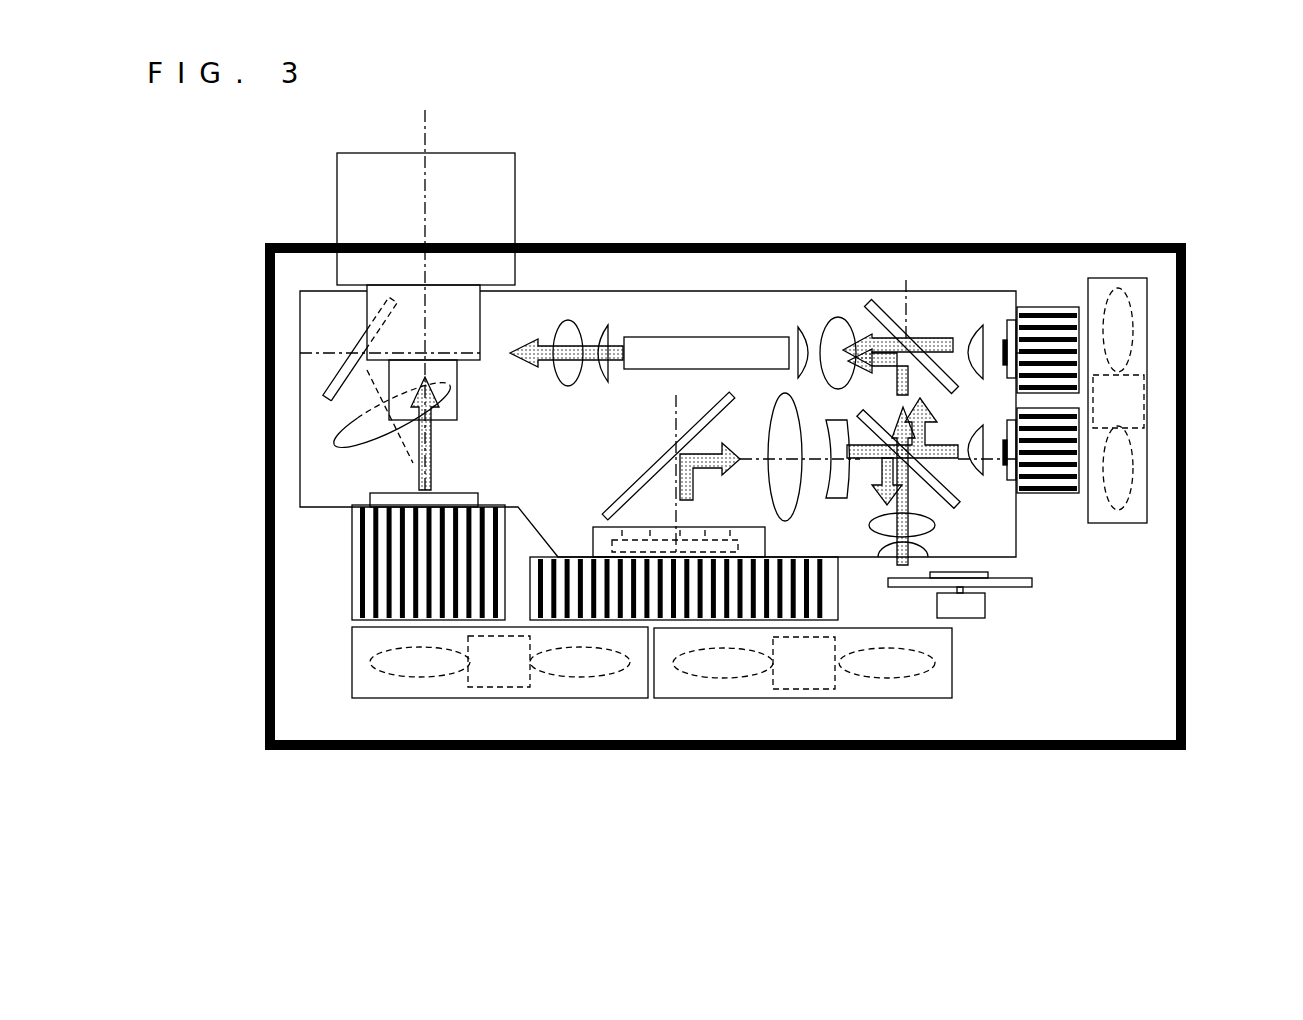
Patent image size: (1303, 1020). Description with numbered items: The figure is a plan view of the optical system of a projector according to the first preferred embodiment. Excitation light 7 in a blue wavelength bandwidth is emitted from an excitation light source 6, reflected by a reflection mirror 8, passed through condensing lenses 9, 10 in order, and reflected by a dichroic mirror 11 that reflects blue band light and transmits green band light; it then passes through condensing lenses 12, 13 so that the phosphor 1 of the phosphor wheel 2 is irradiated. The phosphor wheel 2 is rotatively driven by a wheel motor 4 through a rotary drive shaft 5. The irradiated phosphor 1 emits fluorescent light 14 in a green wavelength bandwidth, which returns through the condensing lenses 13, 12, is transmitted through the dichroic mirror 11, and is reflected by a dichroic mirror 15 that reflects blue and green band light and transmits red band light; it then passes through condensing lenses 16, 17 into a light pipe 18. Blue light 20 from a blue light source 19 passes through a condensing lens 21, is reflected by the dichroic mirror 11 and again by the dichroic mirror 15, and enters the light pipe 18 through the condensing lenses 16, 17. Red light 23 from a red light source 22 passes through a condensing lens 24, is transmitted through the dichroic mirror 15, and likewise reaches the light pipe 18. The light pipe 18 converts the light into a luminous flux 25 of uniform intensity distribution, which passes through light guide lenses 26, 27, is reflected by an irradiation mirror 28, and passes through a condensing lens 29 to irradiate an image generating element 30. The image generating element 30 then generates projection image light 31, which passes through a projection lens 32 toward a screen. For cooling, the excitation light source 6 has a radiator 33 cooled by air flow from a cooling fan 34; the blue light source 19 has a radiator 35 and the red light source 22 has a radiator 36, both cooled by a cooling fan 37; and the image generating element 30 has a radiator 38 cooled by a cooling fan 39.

The phosphor 1 is at (1015, 575).
The phosphor wheel 2 is at (1033, 582).
The wheel motor 4 is at (968, 620).
The rotary drive shaft 5 is at (965, 590).
The excitation light source 6 is at (672, 535).
The excitation light 7 is at (728, 450).
The reflection mirror 8 is at (653, 470).
The condensing lens 9 is at (782, 395).
The condensing lens 10 is at (830, 420).
The dichroic mirror 11 is at (950, 503).
The condensing lens 12 is at (880, 524).
The condensing lens 13 is at (893, 553).
The fluorescent light 14 is at (895, 508).
The dichroic mirror 15 is at (885, 330).
The condensing lens 16 is at (845, 320).
The condensing lens 17 is at (803, 340).
The light pipe 18 is at (680, 350).
The blue light source 19 is at (1012, 464).
The blue light 20 is at (945, 450).
The condensing lens 21 is at (975, 465).
The red light source 22 is at (1010, 318).
The red light 23 is at (937, 340).
The condensing lens 24 is at (973, 330).
The luminous flux 25 is at (533, 348).
The light guide lens 26 is at (605, 325).
The light guide lens 27 is at (568, 330).
The irradiation mirror 28 is at (322, 390).
The condensing lens 29 is at (353, 428).
The image generating element 30 is at (372, 497).
The projection image light 31 is at (413, 465).
The projection lens 32 is at (475, 165).
The radiator 33 is at (695, 610).
The cooling fan 34 is at (803, 675).
The radiator 35 is at (1065, 425).
The radiator 36 is at (1067, 325).
The cooling fan 37 is at (1133, 405).
The radiator 38 is at (408, 607).
The cooling fan 39 is at (492, 673).